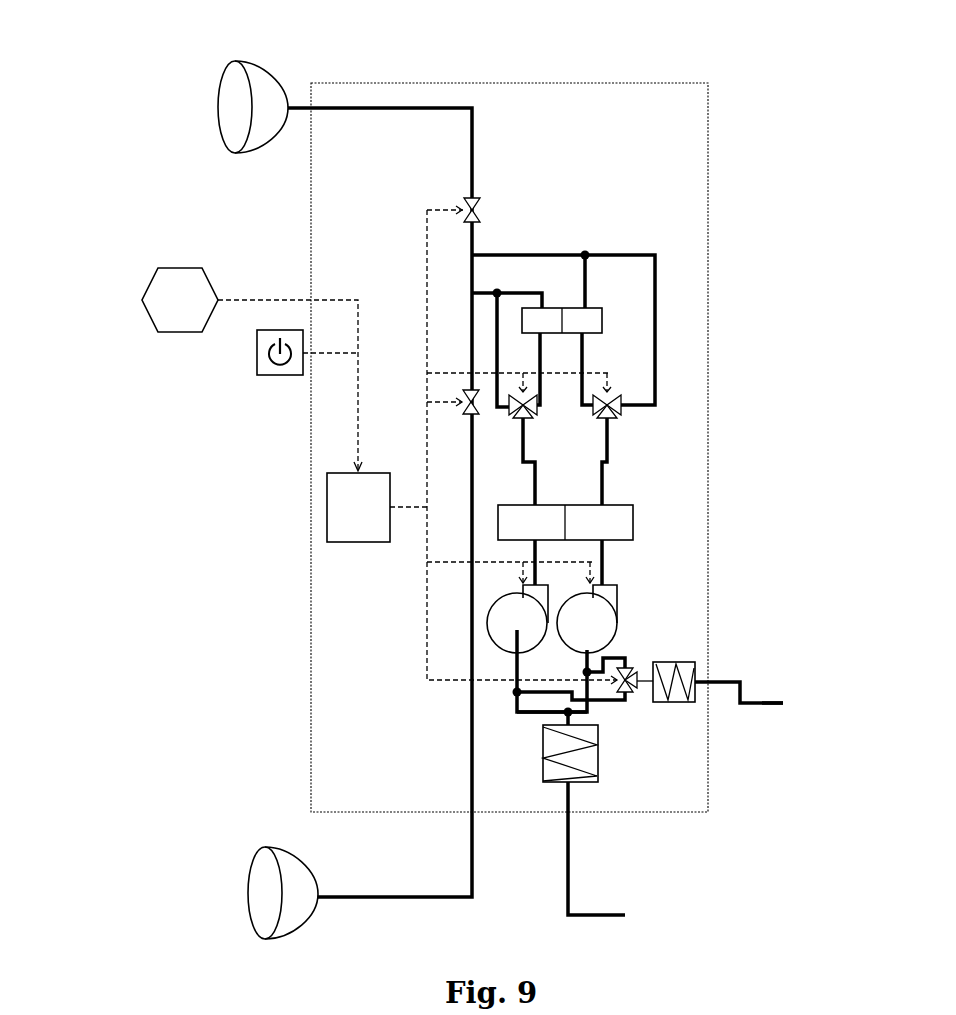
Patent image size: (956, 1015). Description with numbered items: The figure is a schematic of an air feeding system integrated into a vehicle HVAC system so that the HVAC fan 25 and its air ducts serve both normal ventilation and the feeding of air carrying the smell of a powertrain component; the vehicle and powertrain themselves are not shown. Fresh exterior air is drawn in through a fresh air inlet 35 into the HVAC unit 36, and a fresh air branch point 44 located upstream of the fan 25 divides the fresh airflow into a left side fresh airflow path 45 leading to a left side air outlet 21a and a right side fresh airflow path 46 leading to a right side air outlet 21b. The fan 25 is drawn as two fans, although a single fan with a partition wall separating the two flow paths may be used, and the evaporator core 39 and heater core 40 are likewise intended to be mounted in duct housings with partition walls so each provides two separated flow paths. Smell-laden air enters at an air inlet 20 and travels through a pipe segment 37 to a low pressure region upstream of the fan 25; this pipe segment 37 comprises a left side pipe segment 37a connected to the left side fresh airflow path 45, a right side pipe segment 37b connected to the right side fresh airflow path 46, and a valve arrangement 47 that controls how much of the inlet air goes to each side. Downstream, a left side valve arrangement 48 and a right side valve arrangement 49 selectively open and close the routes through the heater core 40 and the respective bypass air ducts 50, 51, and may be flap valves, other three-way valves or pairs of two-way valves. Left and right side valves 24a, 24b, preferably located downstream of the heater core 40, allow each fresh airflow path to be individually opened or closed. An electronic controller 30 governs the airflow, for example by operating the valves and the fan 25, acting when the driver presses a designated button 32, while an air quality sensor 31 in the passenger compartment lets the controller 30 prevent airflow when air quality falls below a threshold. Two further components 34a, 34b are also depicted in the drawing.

The air inlet 20 is at (783, 705).
The left side air outlet 21a is at (233, 115).
The right side air outlet 21b is at (258, 877).
The left side valve 24a is at (480, 200).
The right side valve 24b is at (474, 420).
The fan 25 is at (507, 617).
The electronic controller 30 is at (327, 495).
The air quality sensor 31 is at (142, 300).
The button 32 is at (257, 367).
The first heater 34a is at (543, 776).
The second heater 34b is at (672, 703).
The fresh air inlet 35 is at (621, 922).
The HVAC unit 36 is at (690, 83).
The pipe segment 37 is at (752, 704).
The left side pipe segment 37a is at (607, 658).
The right side pipe segment 37b is at (520, 713).
The evaporator core 39 is at (423, 555).
The heater core 40 is at (593, 318).
The fresh air branch point 44 is at (565, 714).
The left side fresh airflow path 45 is at (604, 488).
The right side fresh airflow path 46 is at (537, 480).
The valve arrangement 47 is at (633, 672).
The left side valve arrangement 48 is at (620, 412).
The right side valve arrangement 49 is at (523, 420).
The left side bypass air duct 50 is at (655, 280).
The bypass air duct 51 is at (500, 312).